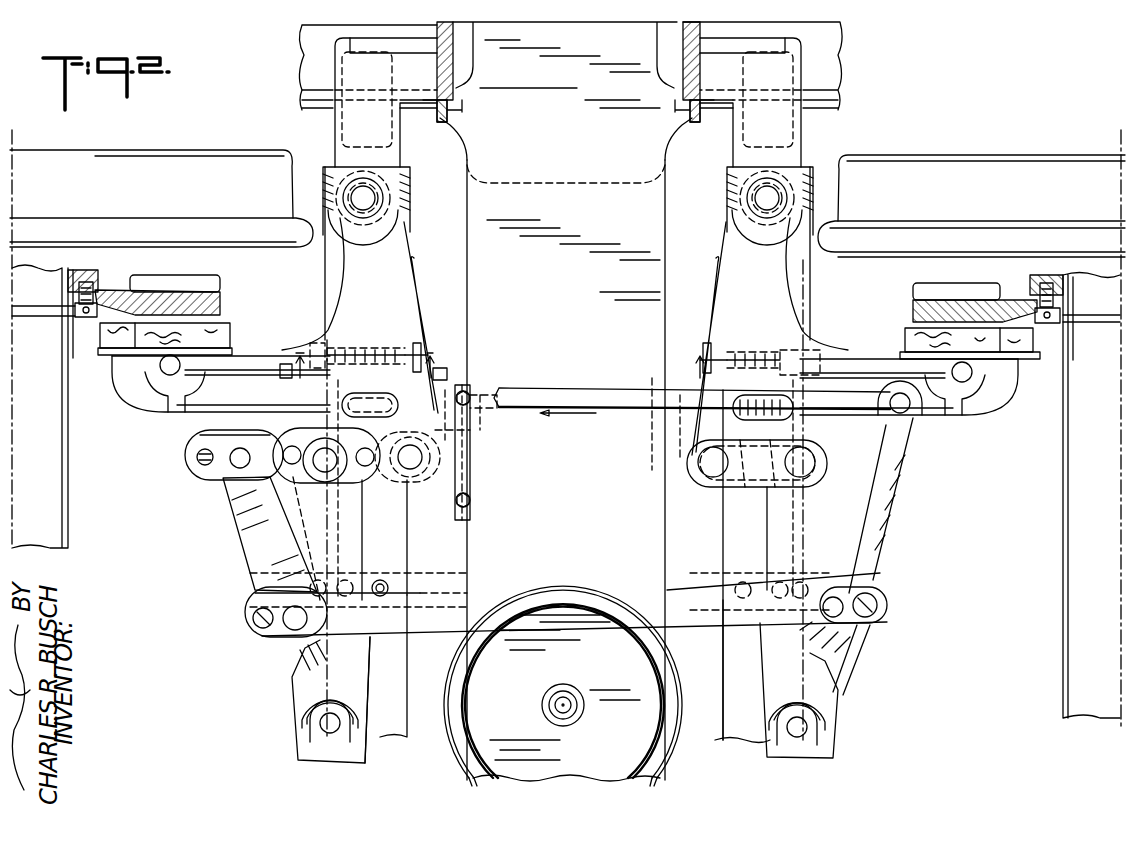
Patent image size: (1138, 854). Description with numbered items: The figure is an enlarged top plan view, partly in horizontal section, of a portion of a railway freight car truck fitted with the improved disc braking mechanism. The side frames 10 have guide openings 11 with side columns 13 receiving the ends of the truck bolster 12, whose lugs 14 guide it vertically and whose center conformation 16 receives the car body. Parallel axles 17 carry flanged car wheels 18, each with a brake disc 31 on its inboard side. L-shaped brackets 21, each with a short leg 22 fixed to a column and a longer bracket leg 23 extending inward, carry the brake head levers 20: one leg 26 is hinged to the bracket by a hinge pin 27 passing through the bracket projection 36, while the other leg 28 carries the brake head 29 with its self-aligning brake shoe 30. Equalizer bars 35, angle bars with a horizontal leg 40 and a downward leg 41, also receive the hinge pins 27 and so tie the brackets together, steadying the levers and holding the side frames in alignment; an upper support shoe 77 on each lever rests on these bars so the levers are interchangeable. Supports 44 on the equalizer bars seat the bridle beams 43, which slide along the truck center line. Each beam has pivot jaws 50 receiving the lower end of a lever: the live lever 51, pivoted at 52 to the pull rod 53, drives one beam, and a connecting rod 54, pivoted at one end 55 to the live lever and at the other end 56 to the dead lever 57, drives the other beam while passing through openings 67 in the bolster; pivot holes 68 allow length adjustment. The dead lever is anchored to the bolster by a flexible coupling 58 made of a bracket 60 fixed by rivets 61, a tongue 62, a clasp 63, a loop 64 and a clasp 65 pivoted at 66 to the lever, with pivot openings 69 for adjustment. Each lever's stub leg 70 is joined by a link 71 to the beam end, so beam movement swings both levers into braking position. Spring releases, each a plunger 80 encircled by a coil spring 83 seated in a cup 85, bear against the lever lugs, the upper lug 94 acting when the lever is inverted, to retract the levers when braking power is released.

The side frame 10 is at (482, 89).
The guide opening 11 is at (465, 82).
The truck bolster 12 is at (478, 206).
The side column 13 is at (450, 112).
The lug 14 is at (436, 123).
The center conformation 16 is at (546, 600).
The axle 17 is at (42, 487).
The car wheel 18 is at (149, 165).
The brake head lever 20 is at (150, 394).
The bracket 21 is at (330, 64).
The short leg 22 is at (413, 63).
The longer bracket leg 23 is at (352, 118).
The leg 26 is at (383, 263).
The hinge pin 27 is at (368, 200).
The leg 28 is at (262, 358).
The brake head 29 is at (140, 366).
The brake shoe 30 is at (220, 330).
The brake disc 31 is at (196, 292).
The equalizer bar 35 is at (800, 290).
The projection 36 is at (338, 204).
The horizontal leg 40 is at (400, 656).
The leg 41 is at (325, 266).
The bridle beam 43 is at (300, 695).
The support 44 is at (390, 575).
The pivot jaw 50 is at (352, 692).
The live lever 51 is at (850, 640).
The pivotal connection 52 is at (902, 428).
The pull rod 53 is at (585, 395).
The connecting rod 54 is at (692, 618).
The end 55 is at (860, 583).
The end 56 is at (294, 622).
The dead lever 57 is at (252, 520).
The flexible coupling 58 is at (192, 485).
The bracket 60 is at (478, 470).
The rivet 61 is at (495, 432).
The tongue 62 is at (470, 446).
The clasp 63 is at (392, 485).
The loop 64 is at (350, 538).
The clasp 65 is at (190, 447).
The pivotal connection 66 is at (237, 455).
The opening 67 is at (487, 590).
The pivot hole 68 is at (258, 618).
The pivot opening 69 is at (188, 462).
The stub leg 70 is at (460, 400).
The link 71 is at (795, 446).
The support shoe 77 is at (378, 396).
The plunger 80 is at (400, 355).
The coil spring 83 is at (365, 345).
The cup 85 is at (340, 355).
The upper lug 94 is at (430, 350).